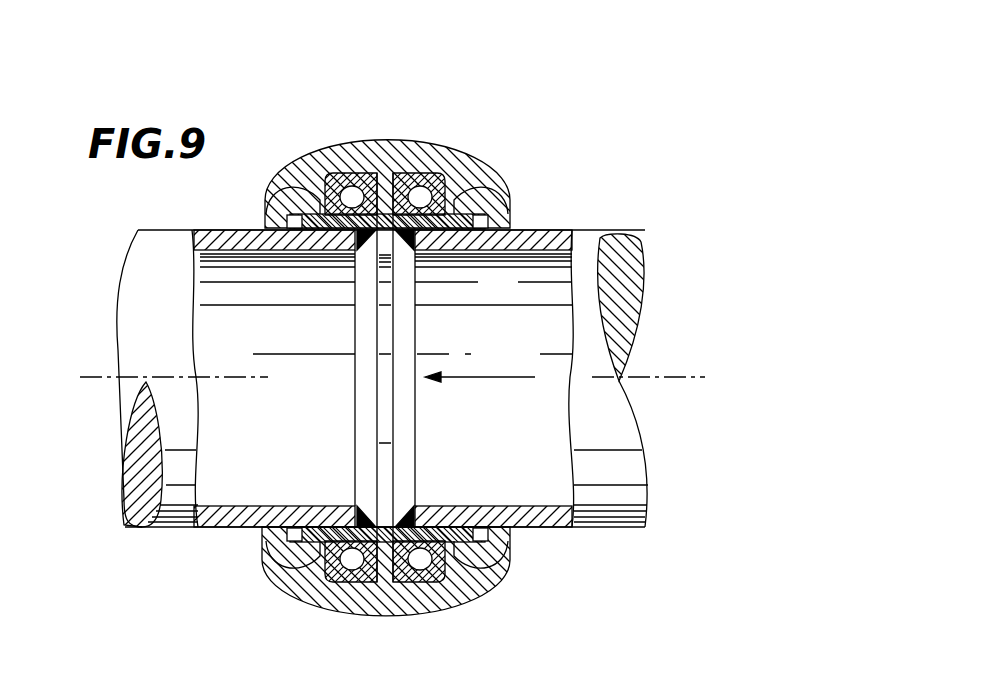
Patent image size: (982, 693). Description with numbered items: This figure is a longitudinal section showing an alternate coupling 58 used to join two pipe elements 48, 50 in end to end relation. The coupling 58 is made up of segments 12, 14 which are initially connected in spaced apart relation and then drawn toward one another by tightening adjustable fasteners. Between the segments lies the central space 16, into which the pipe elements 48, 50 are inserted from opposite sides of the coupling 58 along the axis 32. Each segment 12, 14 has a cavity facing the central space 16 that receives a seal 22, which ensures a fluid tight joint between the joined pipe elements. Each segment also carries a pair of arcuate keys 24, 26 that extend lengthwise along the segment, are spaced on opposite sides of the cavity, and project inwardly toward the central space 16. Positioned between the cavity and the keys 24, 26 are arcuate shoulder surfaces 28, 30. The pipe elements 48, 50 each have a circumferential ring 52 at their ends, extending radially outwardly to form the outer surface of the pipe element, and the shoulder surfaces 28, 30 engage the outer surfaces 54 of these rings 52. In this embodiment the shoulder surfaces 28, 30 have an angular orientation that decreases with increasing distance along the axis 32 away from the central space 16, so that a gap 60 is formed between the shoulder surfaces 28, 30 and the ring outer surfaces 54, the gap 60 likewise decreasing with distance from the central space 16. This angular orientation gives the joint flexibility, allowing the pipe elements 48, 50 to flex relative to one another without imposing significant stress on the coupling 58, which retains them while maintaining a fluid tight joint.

The segment 12 is at (352, 141).
The segment 14 is at (305, 590).
The central space 16 is at (378, 442).
The seal 22 is at (463, 578).
The arcuate key 24 is at (268, 222).
The arcuate key 26 is at (505, 222).
The arcuate shoulder surface 28 is at (278, 197).
The arcuate shoulder surface 30 is at (496, 212).
The axis 32 is at (672, 376).
The pipe element 48 is at (245, 528).
The pipe element 50 is at (540, 528).
The circumferential ring 52 is at (478, 573).
The outer surface 54 is at (500, 249).
The coupling 58 is at (568, 171).
The gap 60 is at (456, 200).